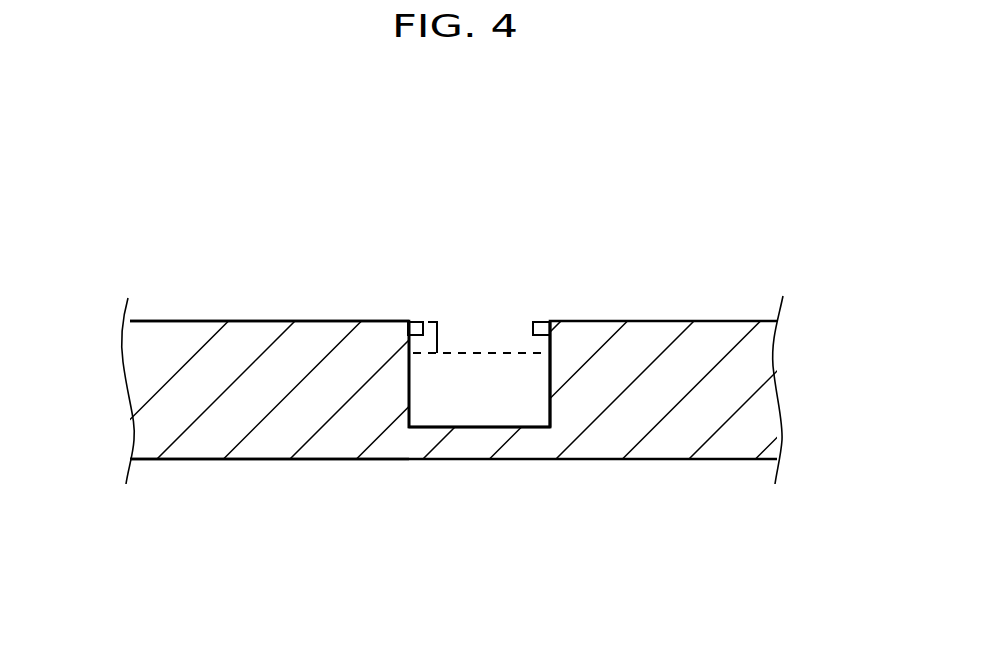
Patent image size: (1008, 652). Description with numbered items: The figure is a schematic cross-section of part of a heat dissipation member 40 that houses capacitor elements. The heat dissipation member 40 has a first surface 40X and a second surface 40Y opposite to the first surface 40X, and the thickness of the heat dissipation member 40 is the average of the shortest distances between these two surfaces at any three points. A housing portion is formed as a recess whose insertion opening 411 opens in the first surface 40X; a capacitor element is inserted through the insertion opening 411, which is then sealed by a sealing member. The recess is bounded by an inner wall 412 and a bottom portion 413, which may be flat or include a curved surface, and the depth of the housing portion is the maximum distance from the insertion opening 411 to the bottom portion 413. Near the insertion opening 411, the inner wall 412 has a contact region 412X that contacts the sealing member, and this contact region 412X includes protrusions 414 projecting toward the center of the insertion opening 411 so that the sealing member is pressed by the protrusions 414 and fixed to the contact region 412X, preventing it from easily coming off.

The heat dissipation member 40 is at (678, 338).
The first surface 40X is at (238, 320).
The second surface 40Y is at (245, 462).
The insertion opening 411 is at (471, 313).
The inner wall 412 is at (538, 366).
The contact region 412X is at (437, 340).
The bottom portion 413 is at (447, 412).
The protrusion 414 is at (415, 322).